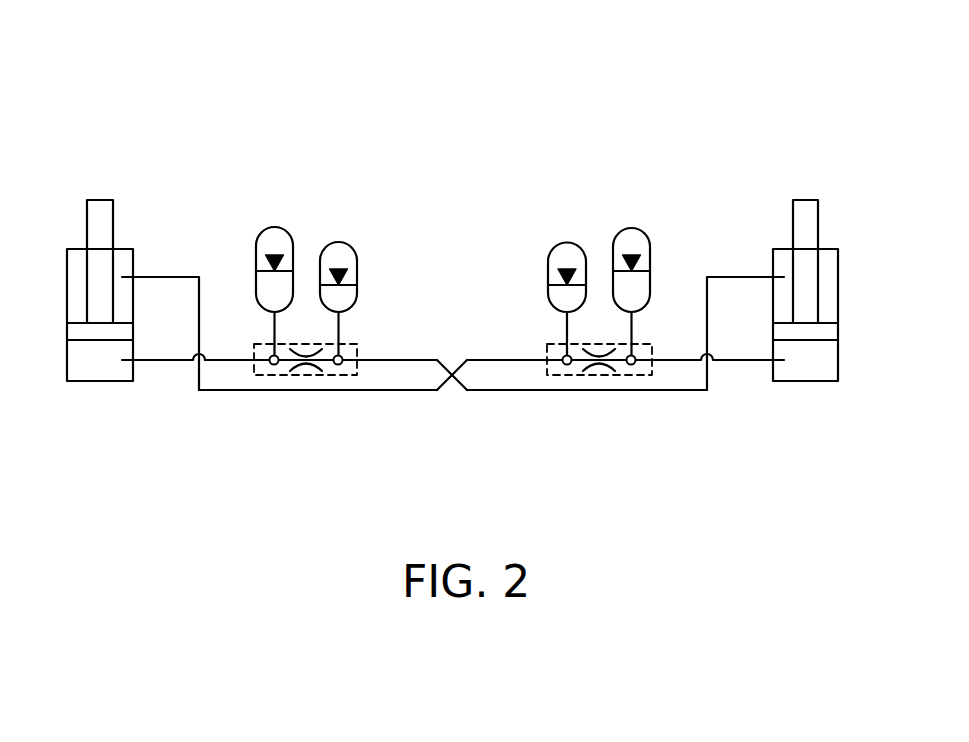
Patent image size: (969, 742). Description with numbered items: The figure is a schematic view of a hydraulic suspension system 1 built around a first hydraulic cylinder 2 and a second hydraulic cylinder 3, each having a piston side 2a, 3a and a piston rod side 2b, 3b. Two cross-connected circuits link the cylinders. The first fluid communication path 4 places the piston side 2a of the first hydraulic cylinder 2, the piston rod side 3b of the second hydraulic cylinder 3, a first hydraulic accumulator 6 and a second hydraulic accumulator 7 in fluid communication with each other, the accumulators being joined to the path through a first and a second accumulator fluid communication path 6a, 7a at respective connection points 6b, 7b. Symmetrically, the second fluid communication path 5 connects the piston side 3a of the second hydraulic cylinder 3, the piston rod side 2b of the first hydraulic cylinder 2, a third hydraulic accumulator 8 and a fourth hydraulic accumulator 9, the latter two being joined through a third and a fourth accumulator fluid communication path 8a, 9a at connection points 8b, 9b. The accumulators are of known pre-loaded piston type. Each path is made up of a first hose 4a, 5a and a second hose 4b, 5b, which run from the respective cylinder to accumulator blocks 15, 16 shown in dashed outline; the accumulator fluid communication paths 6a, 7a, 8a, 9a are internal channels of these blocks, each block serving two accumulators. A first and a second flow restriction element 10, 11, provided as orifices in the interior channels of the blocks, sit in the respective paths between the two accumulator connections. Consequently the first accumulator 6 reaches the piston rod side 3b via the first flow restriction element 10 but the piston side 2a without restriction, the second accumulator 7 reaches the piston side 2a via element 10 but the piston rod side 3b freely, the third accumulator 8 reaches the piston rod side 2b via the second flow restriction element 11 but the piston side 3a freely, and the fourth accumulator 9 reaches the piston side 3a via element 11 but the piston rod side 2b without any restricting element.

The hydraulic suspension system 1 is at (583, 85).
The first hydraulic cylinder 2 is at (78, 178).
The piston side 2a is at (97, 367).
The piston rod side 2b is at (122, 263).
The second hydraulic cylinder 3 is at (828, 178).
The piston side 3a is at (807, 367).
The piston rod side 3b is at (784, 263).
The first fluid communication path 4 is at (167, 360).
The first hose 4a is at (223, 360).
The second hose 4b is at (672, 390).
The second fluid communication path 5 is at (268, 390).
The first hose 5a is at (737, 360).
The second hose 5b is at (310, 390).
The first hydraulic accumulator 6 is at (282, 208).
The first accumulator fluid communication path 6a is at (273, 328).
The connection point 6b is at (269, 358).
The second hydraulic accumulator 7 is at (350, 223).
The second accumulator fluid communication path 7a is at (341, 328).
The connection point 7b is at (343, 357).
The third hydraulic accumulator 8 is at (623, 207).
The third accumulator fluid communication path 8a is at (633, 328).
The connection point 8b is at (635, 357).
The fourth hydraulic accumulator 9 is at (555, 222).
The fourth accumulator fluid communication path 9a is at (565, 328).
The connection point 9b is at (563, 357).
The first flow restriction element 10 is at (307, 363).
The second flow restriction element 11 is at (597, 363).
The accumulator block 15 is at (358, 373).
The accumulator block 16 is at (543, 373).